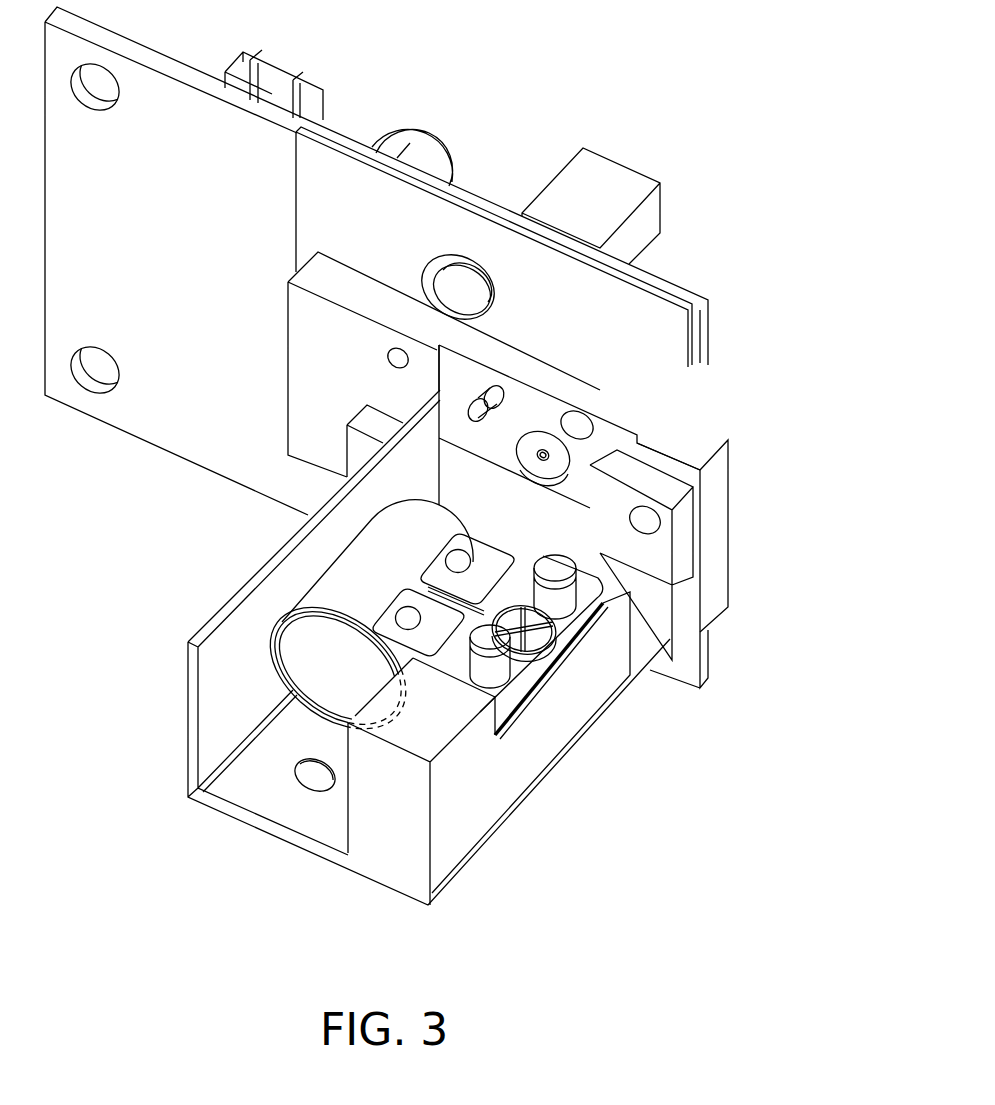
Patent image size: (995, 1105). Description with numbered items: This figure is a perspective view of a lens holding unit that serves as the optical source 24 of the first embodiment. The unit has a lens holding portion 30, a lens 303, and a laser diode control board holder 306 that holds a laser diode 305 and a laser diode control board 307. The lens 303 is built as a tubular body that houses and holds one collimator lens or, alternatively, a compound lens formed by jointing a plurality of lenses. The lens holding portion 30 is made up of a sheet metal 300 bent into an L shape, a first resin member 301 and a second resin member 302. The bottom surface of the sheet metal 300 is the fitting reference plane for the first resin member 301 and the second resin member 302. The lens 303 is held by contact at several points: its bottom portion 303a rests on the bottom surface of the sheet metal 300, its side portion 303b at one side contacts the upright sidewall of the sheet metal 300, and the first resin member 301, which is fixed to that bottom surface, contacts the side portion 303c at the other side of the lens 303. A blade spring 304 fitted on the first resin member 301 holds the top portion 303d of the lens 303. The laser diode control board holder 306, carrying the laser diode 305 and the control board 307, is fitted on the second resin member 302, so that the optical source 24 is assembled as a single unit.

The optical source 24 is at (628, 128).
The lens holding portion 30 is at (142, 523).
The sheet metal 300 is at (188, 702).
The first resin member 301 is at (470, 812).
The second resin member 302 is at (655, 555).
The lens 303 is at (312, 653).
The bottom portion 303a is at (317, 710).
The side portion 303b is at (277, 665).
The side portion 303c is at (398, 728).
The top portion 303d is at (362, 575).
The blade spring 304 is at (432, 637).
The laser diode 305 is at (553, 460).
The laser diode control board holder 306 is at (455, 123).
The laser diode control board 307 is at (332, 180).